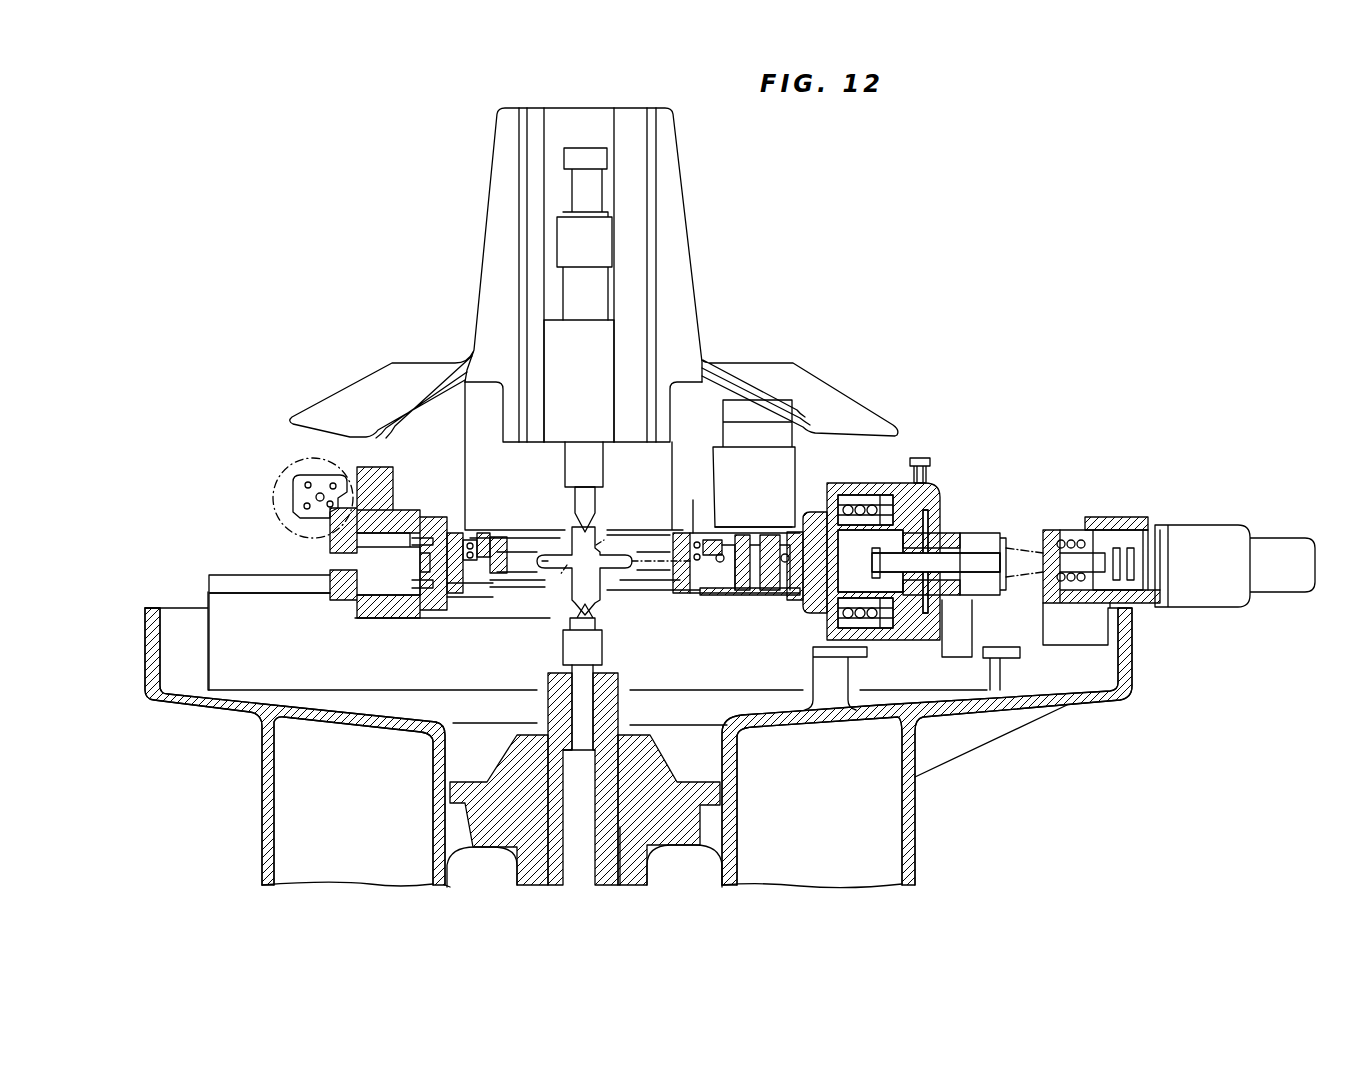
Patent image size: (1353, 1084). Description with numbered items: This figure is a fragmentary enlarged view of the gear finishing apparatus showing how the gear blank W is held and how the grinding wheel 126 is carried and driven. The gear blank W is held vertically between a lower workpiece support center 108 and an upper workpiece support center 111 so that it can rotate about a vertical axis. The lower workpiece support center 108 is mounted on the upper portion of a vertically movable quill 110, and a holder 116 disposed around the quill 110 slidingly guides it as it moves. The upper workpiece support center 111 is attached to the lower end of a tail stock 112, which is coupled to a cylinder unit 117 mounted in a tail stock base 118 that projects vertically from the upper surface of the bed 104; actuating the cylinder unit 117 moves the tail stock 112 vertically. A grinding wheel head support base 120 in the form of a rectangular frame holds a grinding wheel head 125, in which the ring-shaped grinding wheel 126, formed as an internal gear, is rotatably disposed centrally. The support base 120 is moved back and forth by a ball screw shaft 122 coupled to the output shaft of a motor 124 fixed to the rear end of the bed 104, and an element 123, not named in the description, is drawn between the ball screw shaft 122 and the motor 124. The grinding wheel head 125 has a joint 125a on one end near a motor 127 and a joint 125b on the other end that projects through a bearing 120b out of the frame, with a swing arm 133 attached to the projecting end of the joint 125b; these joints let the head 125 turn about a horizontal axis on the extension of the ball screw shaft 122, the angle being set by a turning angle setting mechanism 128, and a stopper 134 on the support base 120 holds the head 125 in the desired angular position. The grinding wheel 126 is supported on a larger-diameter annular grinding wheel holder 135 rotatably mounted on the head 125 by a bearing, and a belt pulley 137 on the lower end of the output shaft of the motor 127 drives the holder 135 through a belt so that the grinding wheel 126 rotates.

The bed 104 is at (915, 872).
The lower workpiece support center 108 is at (590, 606).
The quill 110 is at (553, 690).
The upper workpiece support center 111 is at (596, 508).
The tail stock 112 is at (603, 372).
The holder 116 is at (675, 828).
The cylinder unit 117 is at (598, 248).
The tail stock base 118 is at (510, 128).
The grinding wheel head support base 120 is at (940, 560).
The bearing 120b is at (382, 612).
The ball screw shaft 122 is at (958, 522).
The coupling 123 is at (1010, 542).
The motor 124 is at (1225, 548).
The grinding wheel head 125 is at (720, 602).
The joint 125a is at (830, 587).
The joint 125b is at (437, 500).
The grinding wheel 126 is at (505, 540).
The motor 127 is at (770, 470).
The turning angle setting mechanism 128 is at (263, 480).
The swing arm 133 is at (345, 540).
The stopper 134 is at (918, 470).
The grinding wheel holder 135 is at (690, 528).
The belt pulley 137 is at (705, 598).
The gear blank W is at (568, 545).